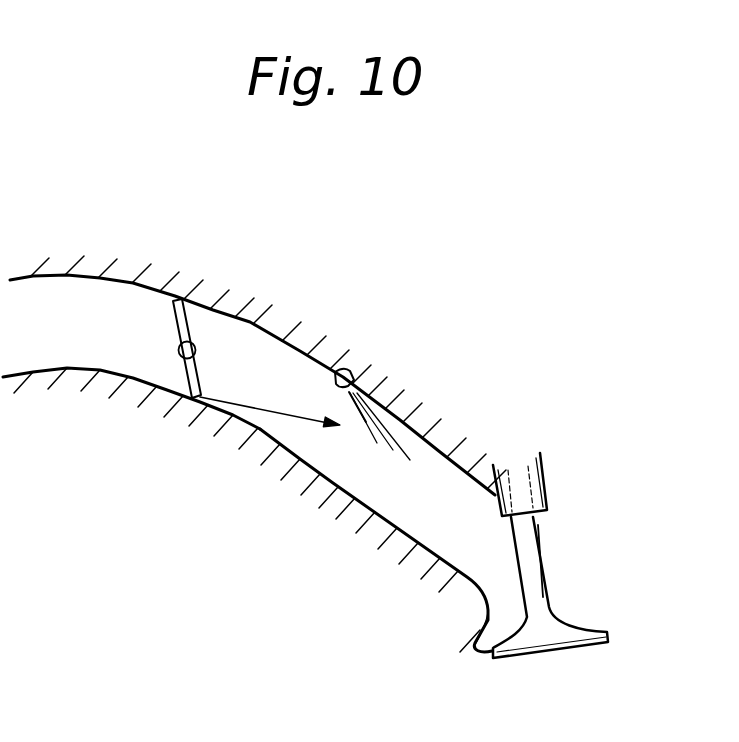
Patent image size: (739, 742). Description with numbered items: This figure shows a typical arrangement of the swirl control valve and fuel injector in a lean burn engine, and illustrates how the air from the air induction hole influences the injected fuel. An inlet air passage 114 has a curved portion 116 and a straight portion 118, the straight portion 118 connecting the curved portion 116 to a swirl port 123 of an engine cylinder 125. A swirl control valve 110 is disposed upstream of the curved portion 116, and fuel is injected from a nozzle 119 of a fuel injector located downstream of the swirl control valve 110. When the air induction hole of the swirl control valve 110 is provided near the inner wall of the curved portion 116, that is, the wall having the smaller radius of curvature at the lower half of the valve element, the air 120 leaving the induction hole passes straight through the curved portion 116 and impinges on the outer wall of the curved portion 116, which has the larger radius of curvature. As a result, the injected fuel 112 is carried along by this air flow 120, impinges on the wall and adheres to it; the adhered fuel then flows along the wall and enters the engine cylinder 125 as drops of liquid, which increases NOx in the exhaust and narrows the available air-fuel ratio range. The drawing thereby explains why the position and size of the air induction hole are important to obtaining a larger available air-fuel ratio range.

The swirl control valve 110 is at (173, 340).
The injected fuel 112 is at (370, 433).
The inlet air passage 114 is at (115, 353).
The curved portion 116 is at (152, 284).
The straight portion 118 is at (427, 430).
The nozzle 119 is at (355, 377).
The air 120 is at (263, 410).
The swirl port 123 is at (502, 615).
The engine cylinder 125 is at (608, 582).